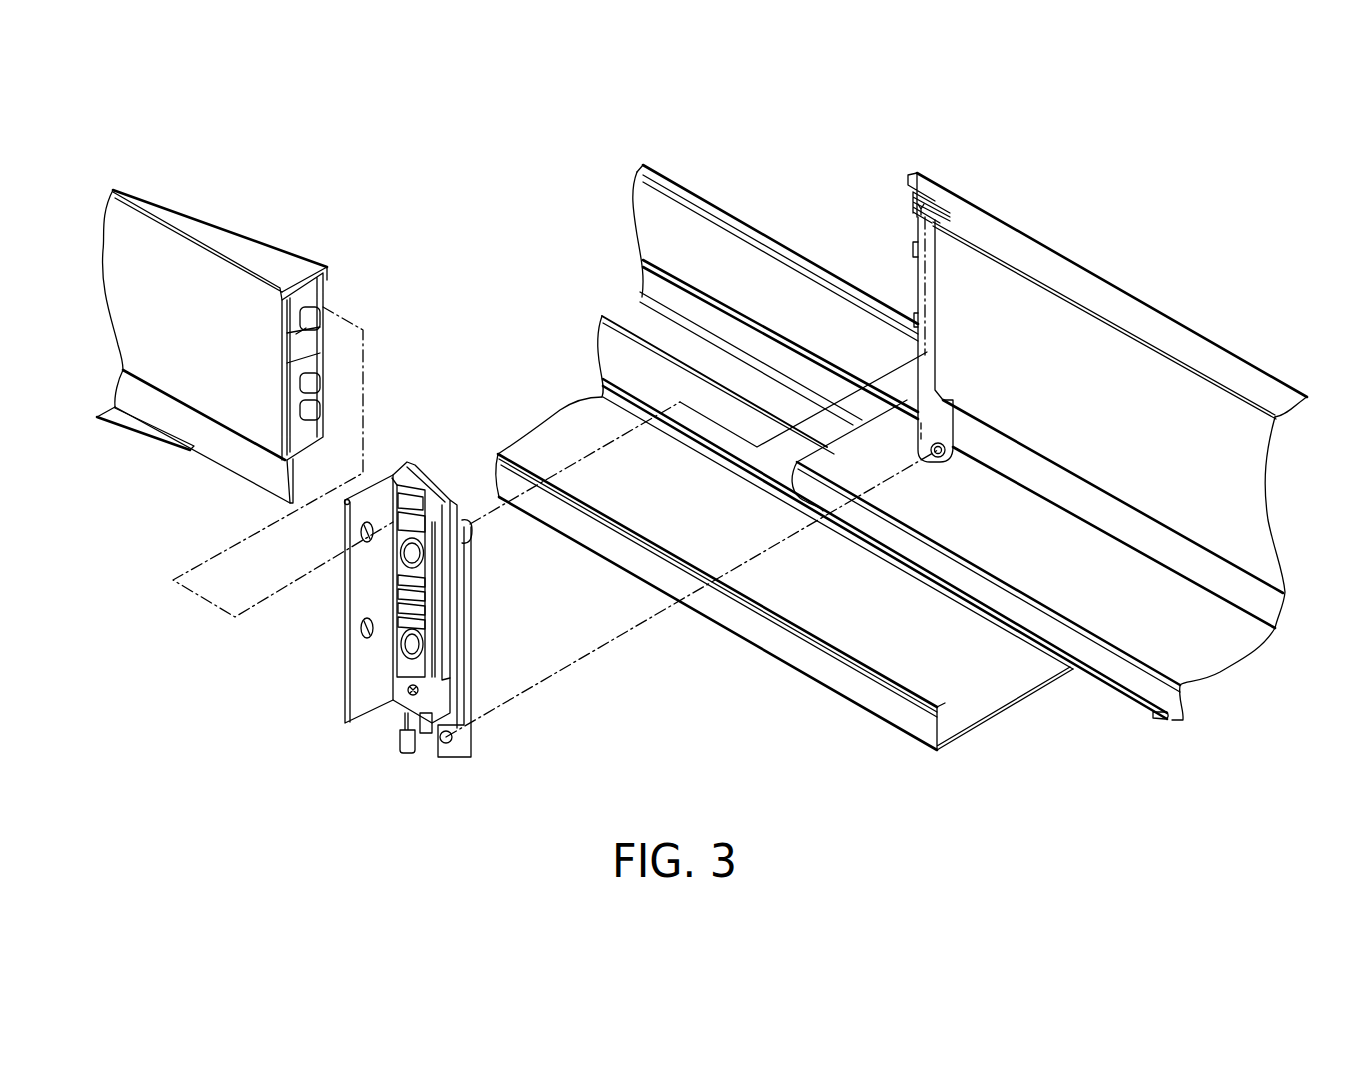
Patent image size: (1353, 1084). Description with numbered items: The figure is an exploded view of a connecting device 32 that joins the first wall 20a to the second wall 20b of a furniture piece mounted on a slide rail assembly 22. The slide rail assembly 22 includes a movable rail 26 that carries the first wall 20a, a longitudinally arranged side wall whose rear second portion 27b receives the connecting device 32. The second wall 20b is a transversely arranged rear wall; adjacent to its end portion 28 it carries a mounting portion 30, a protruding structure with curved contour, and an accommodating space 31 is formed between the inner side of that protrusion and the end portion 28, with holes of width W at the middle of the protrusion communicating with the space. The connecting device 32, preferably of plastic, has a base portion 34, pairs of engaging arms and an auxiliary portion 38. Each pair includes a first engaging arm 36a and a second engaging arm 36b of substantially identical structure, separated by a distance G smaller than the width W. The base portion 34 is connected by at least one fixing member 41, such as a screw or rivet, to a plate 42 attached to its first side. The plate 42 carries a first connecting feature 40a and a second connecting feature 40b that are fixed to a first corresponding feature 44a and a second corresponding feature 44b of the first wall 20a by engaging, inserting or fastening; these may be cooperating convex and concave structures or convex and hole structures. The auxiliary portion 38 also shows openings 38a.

The first wall 20a is at (1170, 310).
The second wall 20b is at (170, 170).
The slide rail assembly 22 is at (770, 213).
The movable rail 26 is at (627, 315).
The second portion 27b is at (958, 207).
The end portion 28 is at (291, 332).
The mounting portion 30 is at (308, 320).
The accommodating space 31 is at (303, 293).
The connecting device 32 is at (418, 647).
The base portion 34 is at (447, 493).
The first engaging arm 36a is at (423, 587).
The second engaging arm 36b is at (423, 593).
The auxiliary portion 38 is at (358, 580).
The mounting holes 38a is at (362, 527).
The first connecting feature 40a is at (473, 530).
The second connecting feature 40b is at (452, 738).
The fixing member 41 is at (392, 478).
The plate 42 is at (471, 617).
The first corresponding feature 44a is at (910, 207).
The second corresponding feature 44b is at (945, 443).